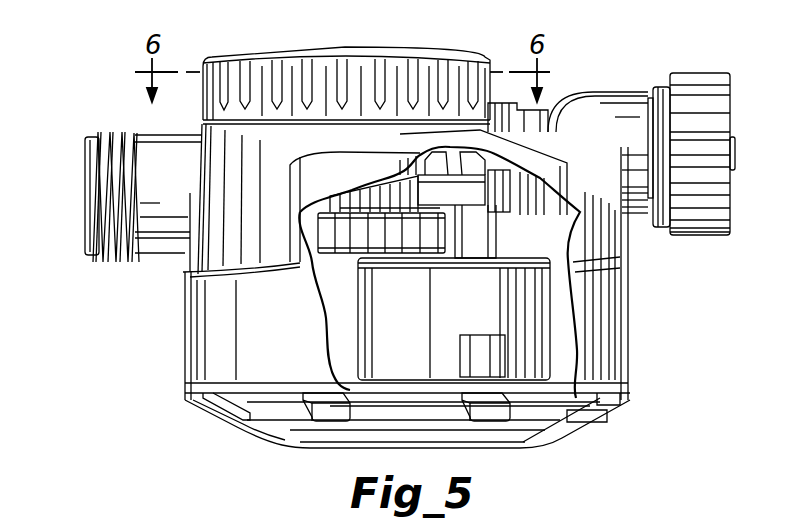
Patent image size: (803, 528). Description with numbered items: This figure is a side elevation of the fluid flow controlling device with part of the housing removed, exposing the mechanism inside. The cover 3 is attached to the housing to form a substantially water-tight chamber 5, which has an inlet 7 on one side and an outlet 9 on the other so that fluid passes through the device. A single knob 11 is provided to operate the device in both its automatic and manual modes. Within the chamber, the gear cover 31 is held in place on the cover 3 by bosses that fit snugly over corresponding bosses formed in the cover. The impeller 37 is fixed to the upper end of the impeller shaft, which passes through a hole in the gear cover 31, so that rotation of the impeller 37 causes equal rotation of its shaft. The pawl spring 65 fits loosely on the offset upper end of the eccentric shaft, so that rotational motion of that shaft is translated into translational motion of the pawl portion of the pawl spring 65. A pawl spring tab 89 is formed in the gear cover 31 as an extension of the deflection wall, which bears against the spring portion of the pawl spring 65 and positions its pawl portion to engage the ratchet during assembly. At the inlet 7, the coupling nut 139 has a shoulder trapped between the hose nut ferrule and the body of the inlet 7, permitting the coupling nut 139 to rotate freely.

The cover 3 is at (262, 432).
The chamber 5 is at (336, 310).
The inlet 7 is at (735, 140).
The outlet 9 is at (85, 197).
The knob 11 is at (452, 58).
The gear cover 31 is at (452, 307).
The impeller 37 is at (352, 245).
The pawl spring 65 is at (470, 196).
The pawl spring tab 89 is at (499, 182).
The coupling nut 139 is at (712, 236).